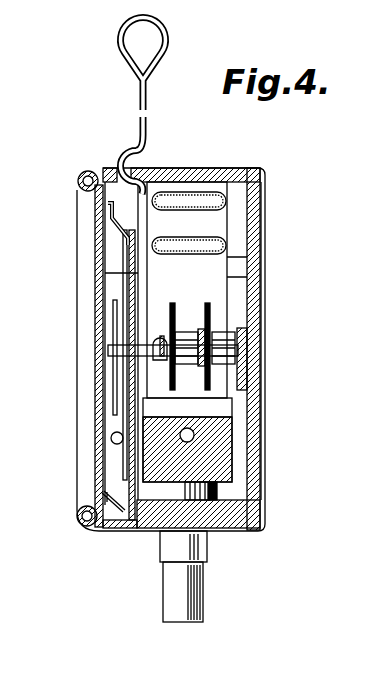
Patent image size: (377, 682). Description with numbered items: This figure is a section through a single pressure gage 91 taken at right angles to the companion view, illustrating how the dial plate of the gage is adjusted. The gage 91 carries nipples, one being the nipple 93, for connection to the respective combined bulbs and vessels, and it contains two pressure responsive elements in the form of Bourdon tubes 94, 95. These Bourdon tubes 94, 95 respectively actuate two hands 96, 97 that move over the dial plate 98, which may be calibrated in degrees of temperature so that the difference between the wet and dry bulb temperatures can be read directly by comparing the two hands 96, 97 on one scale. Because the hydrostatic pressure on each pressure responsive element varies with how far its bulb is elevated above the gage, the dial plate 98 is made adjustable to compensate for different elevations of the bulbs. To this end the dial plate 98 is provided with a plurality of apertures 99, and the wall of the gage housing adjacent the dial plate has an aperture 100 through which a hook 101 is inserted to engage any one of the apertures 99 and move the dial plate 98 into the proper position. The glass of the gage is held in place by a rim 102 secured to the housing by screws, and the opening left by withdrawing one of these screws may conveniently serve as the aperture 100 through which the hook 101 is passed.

The gage 91 is at (252, 423).
The nipple 93 is at (203, 590).
The Bourdon tube 94 is at (221, 270).
The Bourdon tube 95 is at (222, 220).
The hand 96 is at (127, 262).
The hand 97 is at (117, 292).
The dial plate 98 is at (128, 463).
The apertures 99 is at (185, 173).
The aperture 100 is at (130, 166).
The hook 101 is at (140, 99).
The rim 102 is at (78, 489).